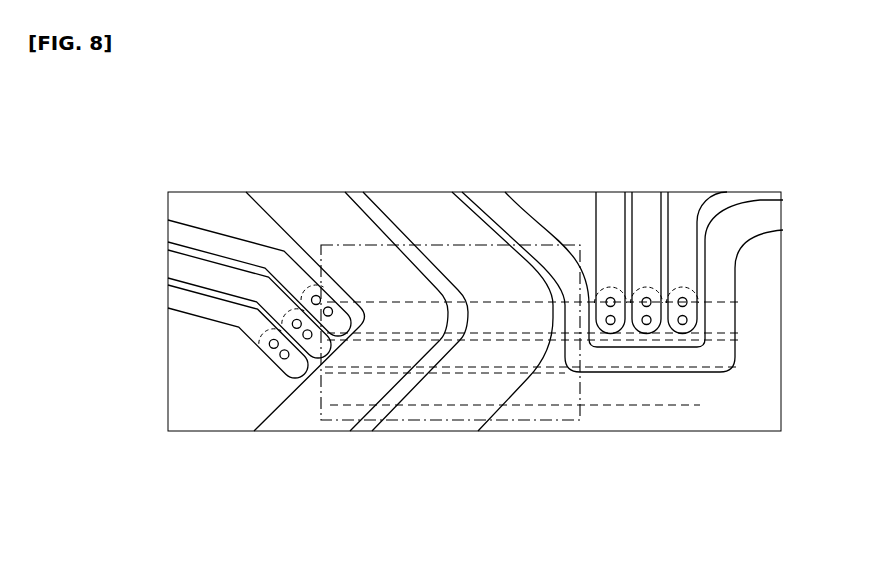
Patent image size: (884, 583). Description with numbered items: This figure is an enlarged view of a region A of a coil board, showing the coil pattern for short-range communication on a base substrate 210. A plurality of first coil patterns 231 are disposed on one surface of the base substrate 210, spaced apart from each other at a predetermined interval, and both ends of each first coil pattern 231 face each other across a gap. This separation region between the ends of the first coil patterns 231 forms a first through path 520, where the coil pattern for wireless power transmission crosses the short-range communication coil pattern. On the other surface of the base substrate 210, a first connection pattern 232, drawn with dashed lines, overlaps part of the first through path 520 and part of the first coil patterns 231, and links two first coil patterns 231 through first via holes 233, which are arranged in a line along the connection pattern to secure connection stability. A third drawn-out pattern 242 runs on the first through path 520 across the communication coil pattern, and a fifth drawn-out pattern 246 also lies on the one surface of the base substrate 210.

The base substrate 210 is at (753, 346).
The region A is at (781, 311).
The first coil pattern 231 is at (170, 292).
The first connection pattern 232 is at (498, 320).
The first via hole 233 is at (284, 356).
The third drawn-out pattern 242 is at (298, 432).
The fifth drawn-out pattern 246 is at (428, 432).
The first through path 520 is at (436, 243).